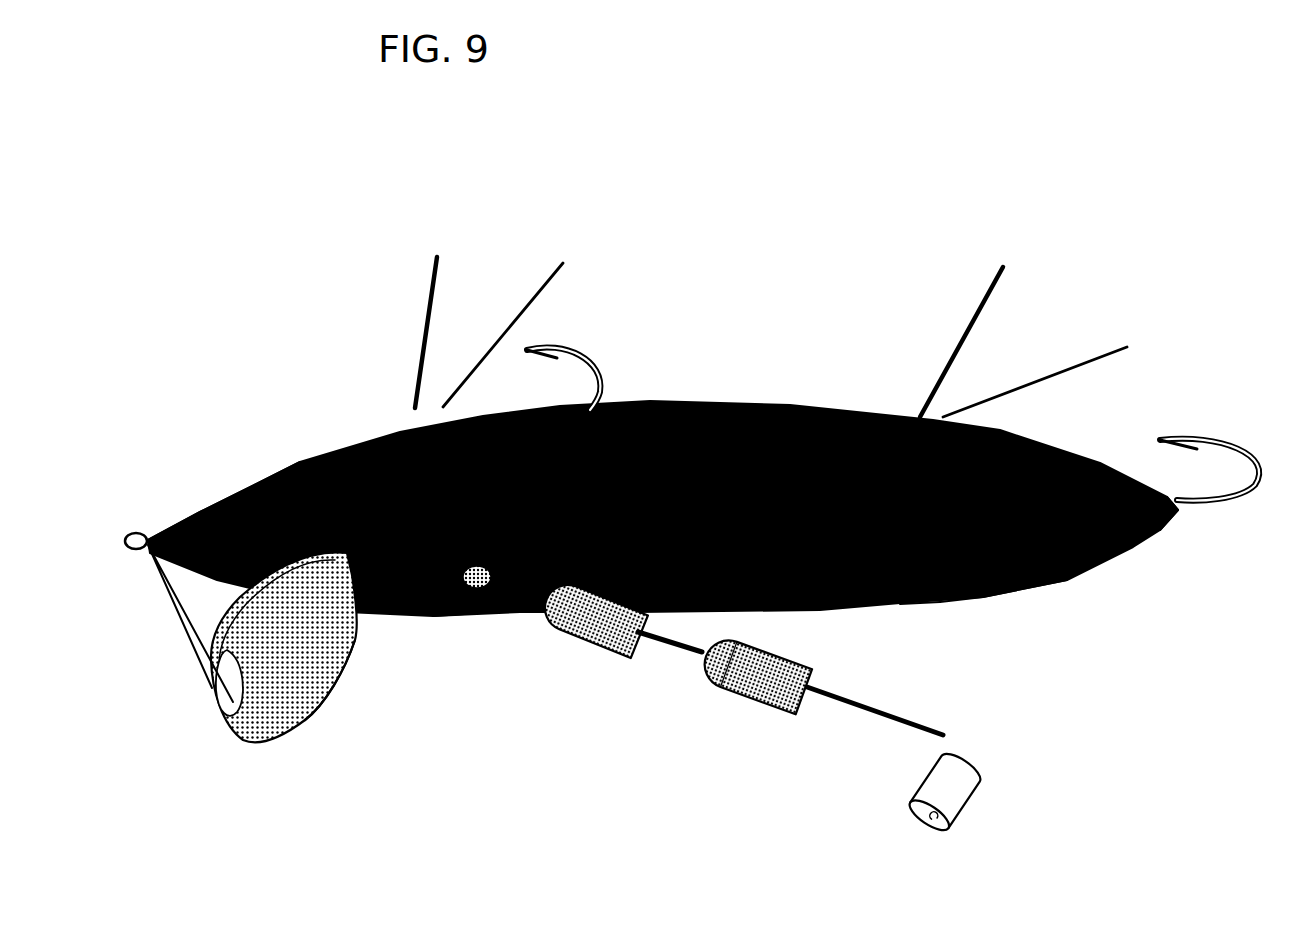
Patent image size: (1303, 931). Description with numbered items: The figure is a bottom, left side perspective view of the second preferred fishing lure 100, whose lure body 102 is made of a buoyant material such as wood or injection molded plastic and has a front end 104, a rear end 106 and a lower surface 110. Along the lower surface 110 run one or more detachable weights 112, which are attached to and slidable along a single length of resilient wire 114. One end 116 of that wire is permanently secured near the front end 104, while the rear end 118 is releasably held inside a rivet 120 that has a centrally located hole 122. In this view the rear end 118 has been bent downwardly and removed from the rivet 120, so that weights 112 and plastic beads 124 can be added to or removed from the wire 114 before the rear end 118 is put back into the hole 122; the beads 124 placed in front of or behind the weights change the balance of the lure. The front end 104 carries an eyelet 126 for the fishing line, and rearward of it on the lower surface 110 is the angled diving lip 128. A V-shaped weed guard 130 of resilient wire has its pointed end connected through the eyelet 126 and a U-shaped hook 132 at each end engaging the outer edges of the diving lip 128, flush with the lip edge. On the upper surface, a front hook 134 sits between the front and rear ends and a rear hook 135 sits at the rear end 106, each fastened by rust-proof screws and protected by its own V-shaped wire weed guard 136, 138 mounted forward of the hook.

The fishing lure 100 is at (702, 453).
The lure body 102 is at (1107, 572).
The front end 104 is at (175, 513).
The rear end 106 is at (1178, 515).
The lower surface 110 is at (1027, 593).
The detachable weights 112 is at (597, 647).
The resilient wire 114 is at (883, 708).
The one end of wire 116 is at (457, 610).
The rear end of wire 118 is at (954, 723).
The rivet 120 is at (977, 603).
The hole 122 is at (930, 600).
The plastic beads 124 is at (471, 610).
The eyelet 126 is at (140, 532).
The diving lip 128 is at (327, 693).
The weed guard 130 is at (190, 640).
The U-shaped hook 132 is at (224, 712).
The front hook 134 is at (583, 360).
The rear hook 135 is at (1220, 440).
The weed guard 136 is at (420, 310).
The weed guard 138 is at (970, 307).